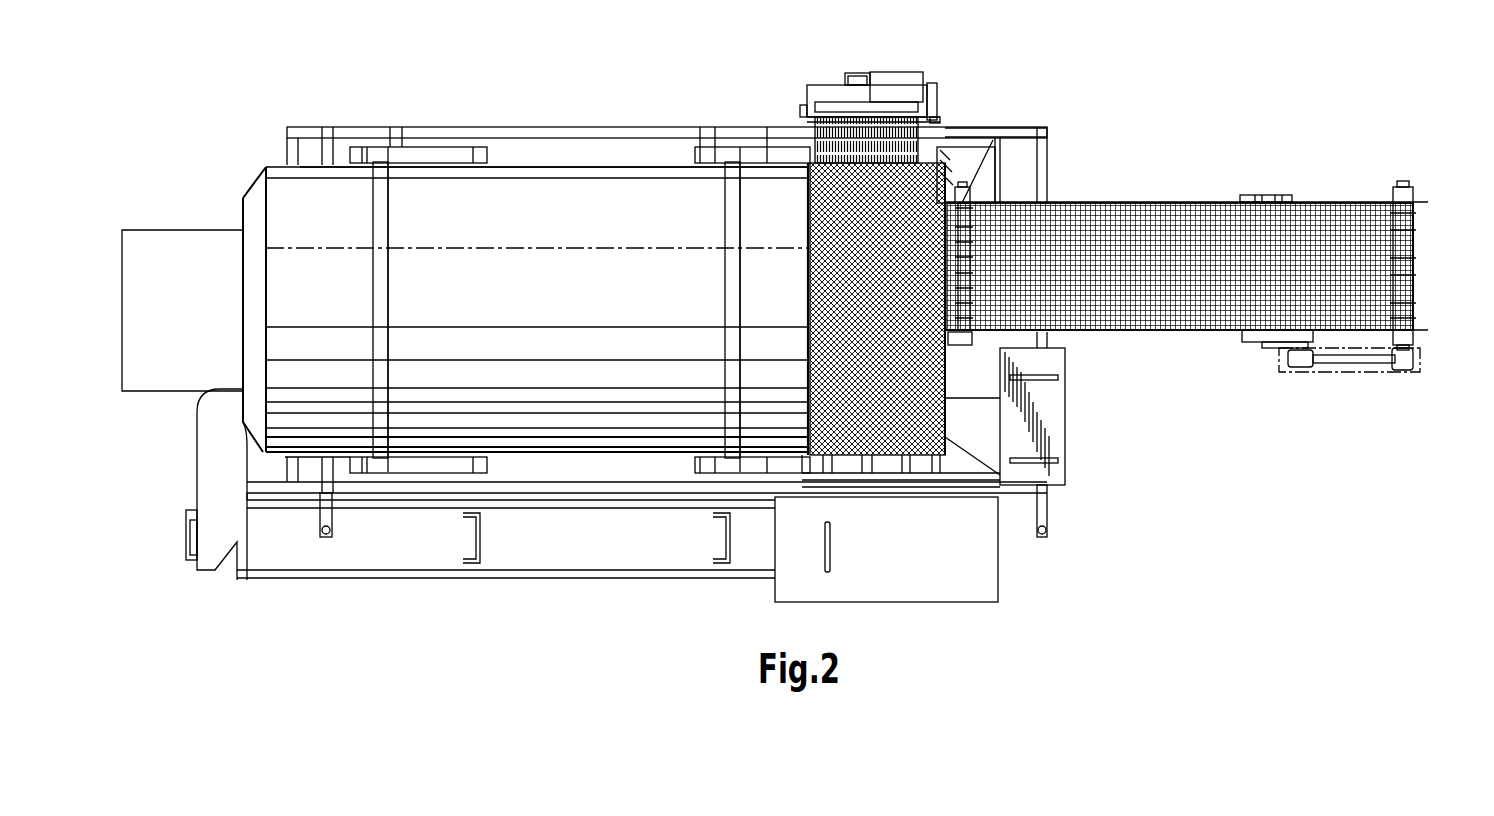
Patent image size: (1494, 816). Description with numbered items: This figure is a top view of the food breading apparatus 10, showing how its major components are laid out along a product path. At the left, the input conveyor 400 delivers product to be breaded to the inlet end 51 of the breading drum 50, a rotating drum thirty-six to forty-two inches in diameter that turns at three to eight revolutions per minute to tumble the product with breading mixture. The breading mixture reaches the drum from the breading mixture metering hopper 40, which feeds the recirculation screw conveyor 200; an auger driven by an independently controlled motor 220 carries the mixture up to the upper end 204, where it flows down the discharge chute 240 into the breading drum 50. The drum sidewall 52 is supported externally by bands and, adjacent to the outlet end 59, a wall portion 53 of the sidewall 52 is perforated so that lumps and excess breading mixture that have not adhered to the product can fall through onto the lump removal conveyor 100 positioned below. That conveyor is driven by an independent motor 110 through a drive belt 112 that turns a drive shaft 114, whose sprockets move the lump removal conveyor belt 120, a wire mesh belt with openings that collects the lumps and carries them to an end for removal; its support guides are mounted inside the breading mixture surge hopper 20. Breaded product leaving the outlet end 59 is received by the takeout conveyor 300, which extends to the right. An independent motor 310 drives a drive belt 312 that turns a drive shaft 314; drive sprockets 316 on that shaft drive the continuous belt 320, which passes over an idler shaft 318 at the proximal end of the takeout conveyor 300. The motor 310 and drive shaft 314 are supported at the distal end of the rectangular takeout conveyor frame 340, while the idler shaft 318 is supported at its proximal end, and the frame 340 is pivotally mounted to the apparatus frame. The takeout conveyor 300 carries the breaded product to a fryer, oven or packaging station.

The food breading apparatus 10 is at (1136, 138).
The breading mixture surge hopper 20 is at (925, 467).
The breading mixture metering hopper 40 is at (855, 570).
The breading drum 50 is at (521, 315).
The inlet end 51 is at (243, 212).
The sidewall 52 is at (596, 185).
The wall portion 53 is at (895, 465).
The outlet end 59 is at (945, 420).
The lump removal conveyor 100 is at (836, 100).
The motor 110 is at (900, 75).
The drive belt 112 is at (935, 100).
The drive shaft 114 is at (942, 121).
The lump removal conveyor belt 120 is at (804, 108).
The recirculation screw conveyor 200 is at (588, 582).
The upper end 204 is at (236, 578).
The motor 220 is at (503, 580).
The discharge chute 240 is at (205, 476).
The takeout conveyor 300 is at (1208, 200).
The motor 310 is at (1310, 372).
The drive belt 312 is at (1352, 365).
The drive shaft 314 is at (1407, 247).
The drive sprockets 316 is at (1404, 232).
The idler shaft 318 is at (965, 222).
The continuous belt 320 is at (1127, 203).
The takeout conveyor frame 340 is at (1357, 200).
The input conveyor 400 is at (167, 320).